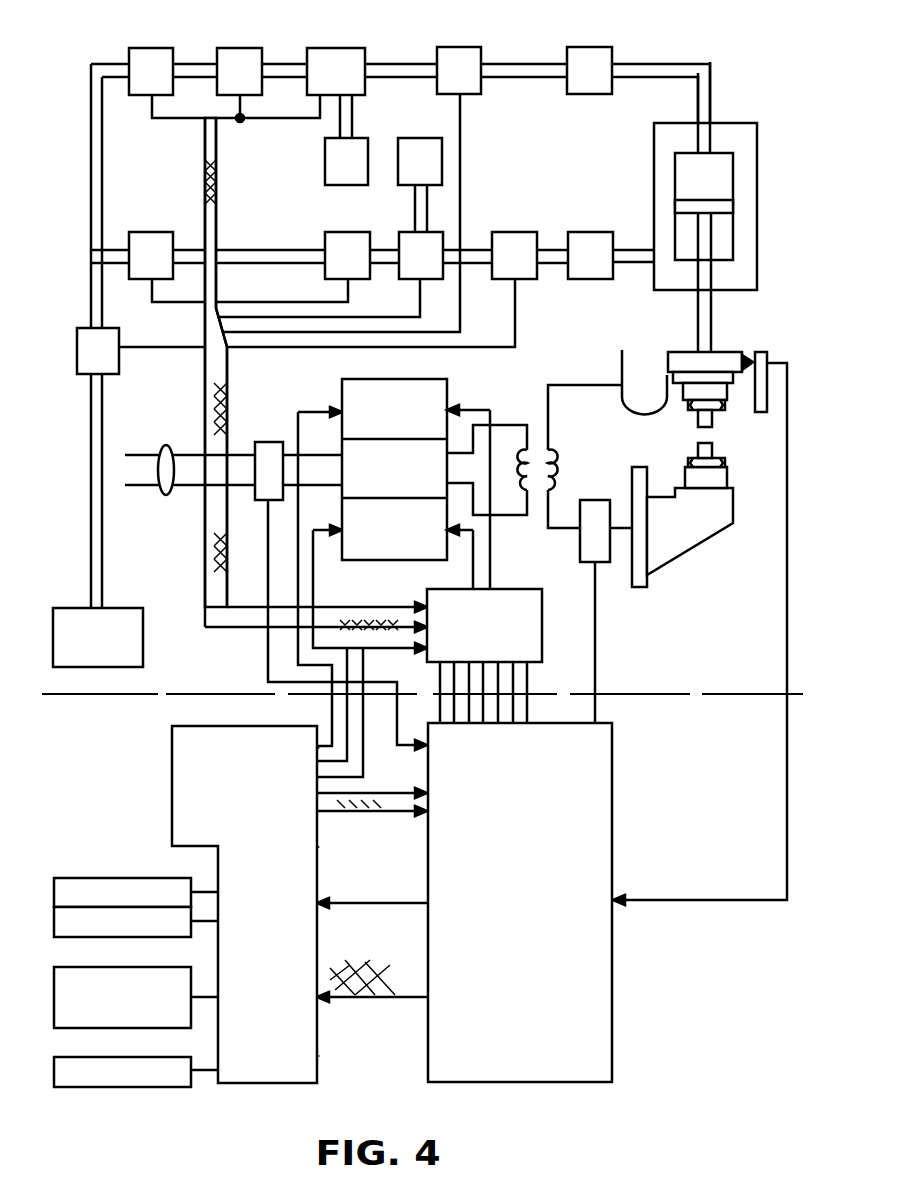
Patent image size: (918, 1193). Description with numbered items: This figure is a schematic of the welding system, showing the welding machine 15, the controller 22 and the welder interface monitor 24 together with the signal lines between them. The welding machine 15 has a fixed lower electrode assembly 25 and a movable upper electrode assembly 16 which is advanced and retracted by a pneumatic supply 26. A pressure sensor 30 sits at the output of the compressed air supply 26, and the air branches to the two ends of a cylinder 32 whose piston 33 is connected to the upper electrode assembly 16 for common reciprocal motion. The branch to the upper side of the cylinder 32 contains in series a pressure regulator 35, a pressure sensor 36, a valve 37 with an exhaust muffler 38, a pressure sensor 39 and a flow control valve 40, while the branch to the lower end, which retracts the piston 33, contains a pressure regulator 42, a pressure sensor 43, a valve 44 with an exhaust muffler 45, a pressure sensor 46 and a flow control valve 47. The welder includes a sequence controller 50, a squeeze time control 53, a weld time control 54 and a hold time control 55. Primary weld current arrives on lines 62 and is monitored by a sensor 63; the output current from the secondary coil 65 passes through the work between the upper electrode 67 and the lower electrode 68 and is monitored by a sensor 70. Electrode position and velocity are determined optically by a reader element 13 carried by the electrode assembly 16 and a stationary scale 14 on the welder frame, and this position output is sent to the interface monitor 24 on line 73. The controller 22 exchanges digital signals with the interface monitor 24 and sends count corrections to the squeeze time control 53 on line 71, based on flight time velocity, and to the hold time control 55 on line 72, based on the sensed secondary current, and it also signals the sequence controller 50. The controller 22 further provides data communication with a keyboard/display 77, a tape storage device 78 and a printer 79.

The reader element 13 is at (745, 350).
The optical scale 14 is at (764, 350).
The welding machine 15 is at (195, 675).
The movable upper electrode assembly 16 is at (688, 329).
The controller 22 is at (252, 1057).
The welder interface monitor 24 is at (465, 1057).
The fixed lower electrode assembly 25 is at (710, 538).
The pneumatic supply 26 is at (128, 608).
The pressure sensor 30 is at (112, 328).
The cylinder 32 is at (683, 179).
The piston 33 is at (683, 207).
The pressure regulator 35 is at (152, 48).
The pressure sensor 36 is at (240, 48).
The valve 37 is at (333, 48).
The exhaust muffler 38 is at (325, 166).
The pressure sensor 39 is at (457, 47).
The flow control valve 40 is at (587, 47).
The pressure regulator 42 is at (152, 232).
The pressure sensor 43 is at (315, 238).
The valve 44 is at (399, 238).
The exhaust muffler 45 is at (411, 138).
The pressure sensor 46 is at (512, 232).
The flow control valve 47 is at (590, 232).
The sequence controller 50 is at (542, 626).
The squeeze time control 53 is at (453, 392).
The weld time control 54 is at (342, 498).
The hold time control 55 is at (385, 560).
The primary weld current lines 62 is at (166, 495).
The sensor 63 is at (268, 442).
The secondary coil 65 is at (537, 515).
The upper electrode 67 is at (698, 419).
The lower electrode 68 is at (712, 450).
The sensor 70 is at (597, 499).
The line 71 is at (308, 408).
The line 72 is at (315, 584).
The line 73 is at (787, 634).
The keyboard/display 77 is at (100, 878).
The tape storage device 78 is at (130, 967).
The printer 79 is at (135, 1057).